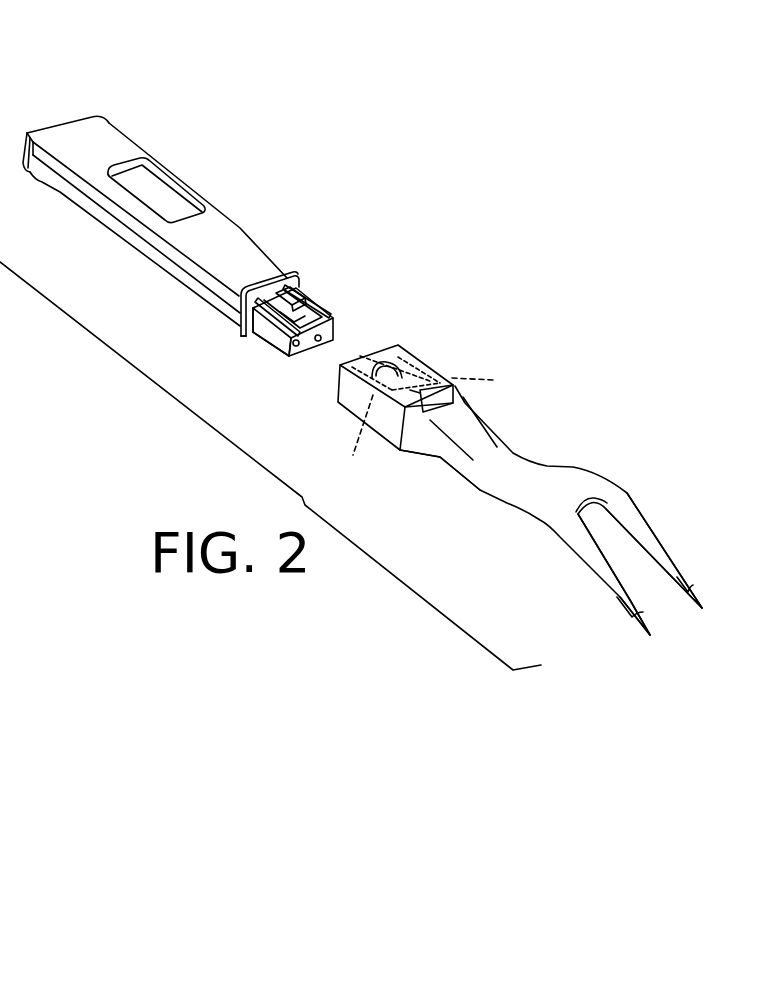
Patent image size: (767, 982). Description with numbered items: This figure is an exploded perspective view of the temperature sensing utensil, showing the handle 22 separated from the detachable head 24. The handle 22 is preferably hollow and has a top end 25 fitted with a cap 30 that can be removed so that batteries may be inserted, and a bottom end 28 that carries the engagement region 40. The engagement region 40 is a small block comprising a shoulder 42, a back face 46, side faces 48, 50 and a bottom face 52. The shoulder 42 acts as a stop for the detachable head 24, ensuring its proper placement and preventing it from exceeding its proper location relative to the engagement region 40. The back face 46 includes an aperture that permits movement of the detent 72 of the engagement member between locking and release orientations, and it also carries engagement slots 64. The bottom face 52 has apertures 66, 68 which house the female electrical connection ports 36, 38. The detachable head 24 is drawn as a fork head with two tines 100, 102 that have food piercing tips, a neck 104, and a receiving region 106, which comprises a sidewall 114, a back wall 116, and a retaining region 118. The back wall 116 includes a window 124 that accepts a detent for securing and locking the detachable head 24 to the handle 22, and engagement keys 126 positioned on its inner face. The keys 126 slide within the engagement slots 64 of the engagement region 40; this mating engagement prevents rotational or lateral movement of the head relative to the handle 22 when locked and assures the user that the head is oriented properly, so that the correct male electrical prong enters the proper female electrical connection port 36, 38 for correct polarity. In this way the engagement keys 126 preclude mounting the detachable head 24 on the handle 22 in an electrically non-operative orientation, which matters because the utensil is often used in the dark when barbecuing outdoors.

The handle 22 is at (197, 188).
The detachable head 24 is at (555, 462).
The top end 25 is at (122, 128).
The bottom end 28 is at (289, 280).
The cap 30 is at (61, 123).
The electrical connection port 36 is at (294, 360).
The electrical connection port 38 is at (322, 340).
The engagement region 40 is at (320, 298).
The shoulder 42 is at (241, 312).
The back face 46 is at (334, 308).
The side face 48 is at (266, 340).
The side face 50 is at (345, 318).
The bottom face 52 is at (294, 347).
The engagement slots 64 is at (336, 299).
The aperture 66 is at (286, 353).
The aperture 68 is at (318, 342).
The detent 72 is at (296, 287).
The tine 100 is at (687, 573).
The tine 102 is at (622, 607).
The neck 104 is at (480, 492).
The receiving region 106 is at (388, 417).
The sidewall 114 is at (353, 398).
The back wall 116 is at (430, 363).
The retaining region 118 is at (392, 373).
The window 124 is at (412, 390).
The engagement keys 126 is at (433, 421).